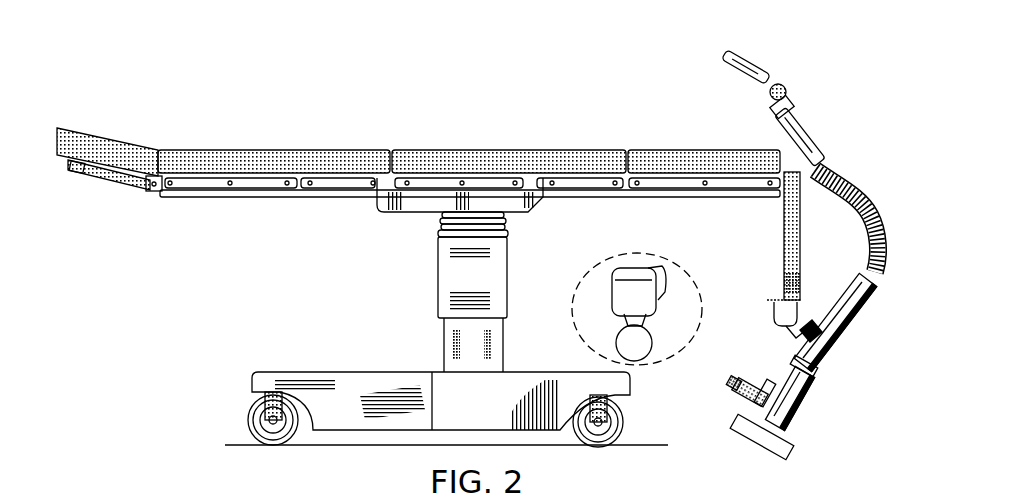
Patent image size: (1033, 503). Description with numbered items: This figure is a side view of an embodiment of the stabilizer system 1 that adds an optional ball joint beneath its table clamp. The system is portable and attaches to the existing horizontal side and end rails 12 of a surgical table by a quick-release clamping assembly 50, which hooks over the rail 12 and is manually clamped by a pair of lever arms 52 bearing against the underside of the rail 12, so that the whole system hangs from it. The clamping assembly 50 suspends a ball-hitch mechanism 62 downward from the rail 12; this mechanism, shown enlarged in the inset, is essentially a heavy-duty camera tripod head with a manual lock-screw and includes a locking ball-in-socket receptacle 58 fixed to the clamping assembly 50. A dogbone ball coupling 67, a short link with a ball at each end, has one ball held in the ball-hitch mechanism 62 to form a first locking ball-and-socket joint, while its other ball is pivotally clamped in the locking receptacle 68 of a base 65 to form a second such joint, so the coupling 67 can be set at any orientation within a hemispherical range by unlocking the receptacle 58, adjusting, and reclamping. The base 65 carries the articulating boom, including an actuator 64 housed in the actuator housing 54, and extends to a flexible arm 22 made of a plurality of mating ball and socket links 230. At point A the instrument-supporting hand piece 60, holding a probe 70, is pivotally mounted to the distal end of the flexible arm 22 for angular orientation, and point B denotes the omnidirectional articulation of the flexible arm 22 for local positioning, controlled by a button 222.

The stabilizer system 1 is at (862, 133).
The rails 12 is at (660, 190).
The flexible arm 22 is at (872, 221).
The quick-release clamping assembly 50 is at (767, 263).
The lever arms 52 is at (782, 267).
The actuator housing 54 is at (802, 405).
The locking ball-in-socket receptacle 58 is at (773, 311).
The hand piece 60 is at (822, 252).
The ball-hitch mechanism 62 is at (770, 322).
The actuator 64 is at (780, 454).
The base 65 is at (856, 327).
The dogbone ball coupling 67 is at (793, 332).
The locking receptacle 68 is at (805, 326).
The probe 70 is at (735, 52).
The button 222 is at (805, 132).
The ball and socket links 230 is at (846, 221).
The point A is at (823, 162).
The point B is at (875, 177).